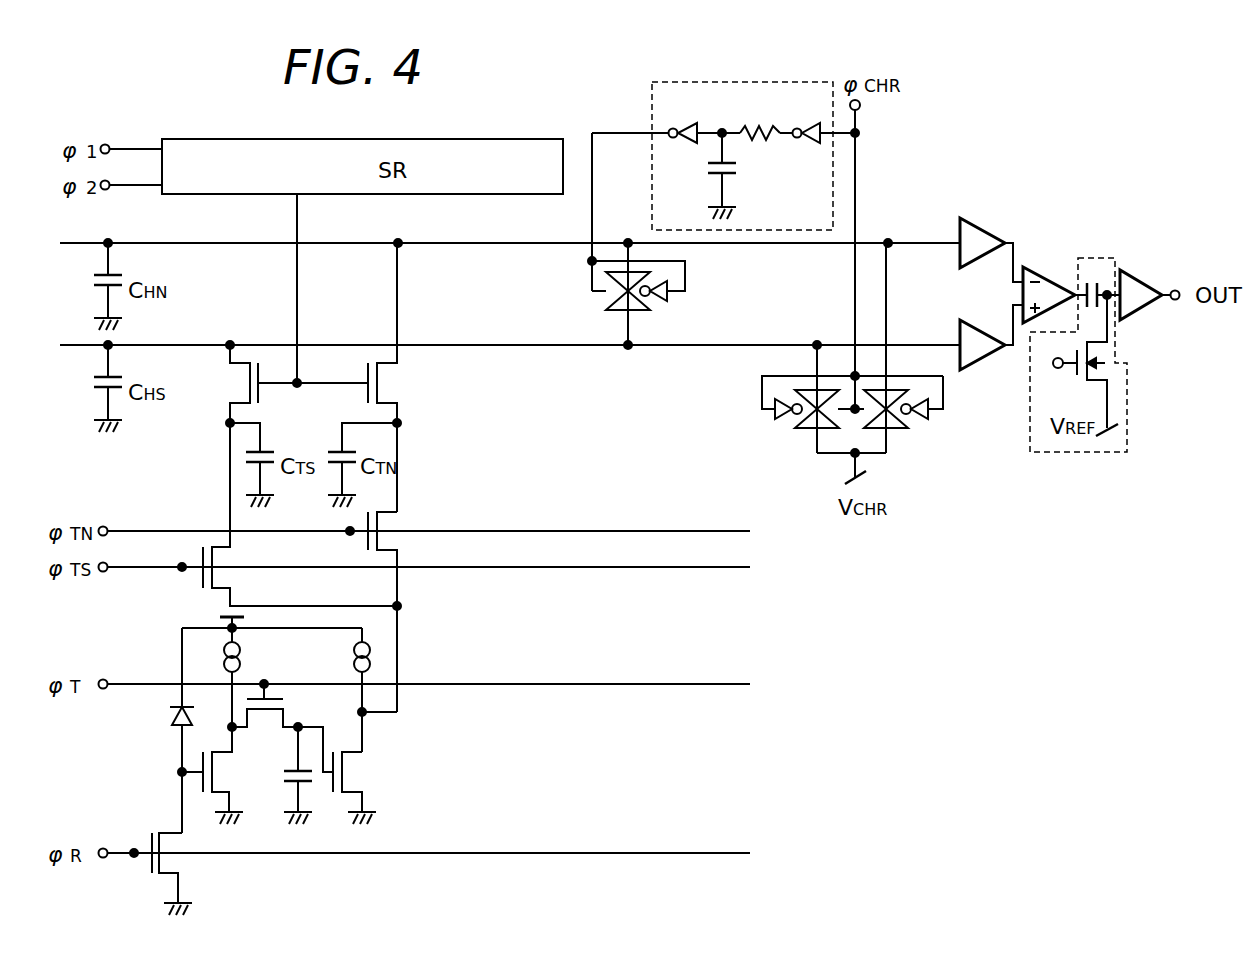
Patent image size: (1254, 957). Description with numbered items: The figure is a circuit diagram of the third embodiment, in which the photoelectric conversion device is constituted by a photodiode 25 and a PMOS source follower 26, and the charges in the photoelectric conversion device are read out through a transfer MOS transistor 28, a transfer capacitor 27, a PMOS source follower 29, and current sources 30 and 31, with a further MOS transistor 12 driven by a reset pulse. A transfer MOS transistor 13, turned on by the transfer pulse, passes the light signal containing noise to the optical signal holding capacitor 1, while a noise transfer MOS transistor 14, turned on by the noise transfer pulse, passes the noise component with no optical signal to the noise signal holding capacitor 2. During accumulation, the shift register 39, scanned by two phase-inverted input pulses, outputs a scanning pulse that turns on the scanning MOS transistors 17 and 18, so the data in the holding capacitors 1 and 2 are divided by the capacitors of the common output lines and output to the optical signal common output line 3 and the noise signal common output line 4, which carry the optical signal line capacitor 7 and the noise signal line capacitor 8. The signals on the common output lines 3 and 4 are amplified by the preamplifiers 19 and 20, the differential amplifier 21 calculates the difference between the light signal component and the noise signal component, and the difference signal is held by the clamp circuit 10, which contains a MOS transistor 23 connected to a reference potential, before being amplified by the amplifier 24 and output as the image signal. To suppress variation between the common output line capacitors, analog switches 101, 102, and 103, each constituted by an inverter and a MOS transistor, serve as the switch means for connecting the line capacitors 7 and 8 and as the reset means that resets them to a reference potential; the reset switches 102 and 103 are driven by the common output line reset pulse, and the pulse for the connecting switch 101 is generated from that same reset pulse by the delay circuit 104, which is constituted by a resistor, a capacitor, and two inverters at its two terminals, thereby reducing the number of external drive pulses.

The optical signal holding capacitor CTS 1 is at (274, 439).
The noise signal holding capacitor CTN 2 is at (366, 450).
The optical signal common output line 3 is at (466, 344).
The noise signal common output line 4 is at (500, 243).
The capacitor CHS 7 is at (88, 386).
The capacitor CHN 8 is at (88, 284).
The clamp circuit 10 is at (1112, 355).
The MOS transistor 12 is at (154, 828).
The transfer MOS transistor 13 is at (202, 594).
The noise transfer MOS transistor 14 is at (402, 540).
The scanning MOS transistor 17 is at (248, 382).
The scanning MOS transistor 18 is at (406, 386).
The preamplifier 19 is at (985, 364).
The preamplifier 20 is at (986, 226).
The differential amplifier 21 is at (1050, 270).
The MOS transistor of clamp circuit 23 is at (1102, 355).
The amplifier 24 is at (1142, 278).
The photodiode 25 is at (174, 720).
The PMOS source follower 26 is at (230, 810).
The transfer capacitor 27 is at (302, 786).
The transfer MOS transistor 28 is at (290, 700).
The PMOS source follower 29 is at (360, 774).
The current source 30 is at (253, 651).
The current source 31 is at (372, 652).
The shift register SR 39 is at (510, 136).
The analog switch 101 is at (600, 304).
The analog switch (reset switch) 102 is at (802, 433).
The analog switch (reset switch) 103 is at (902, 432).
The delay circuit 104 is at (648, 110).